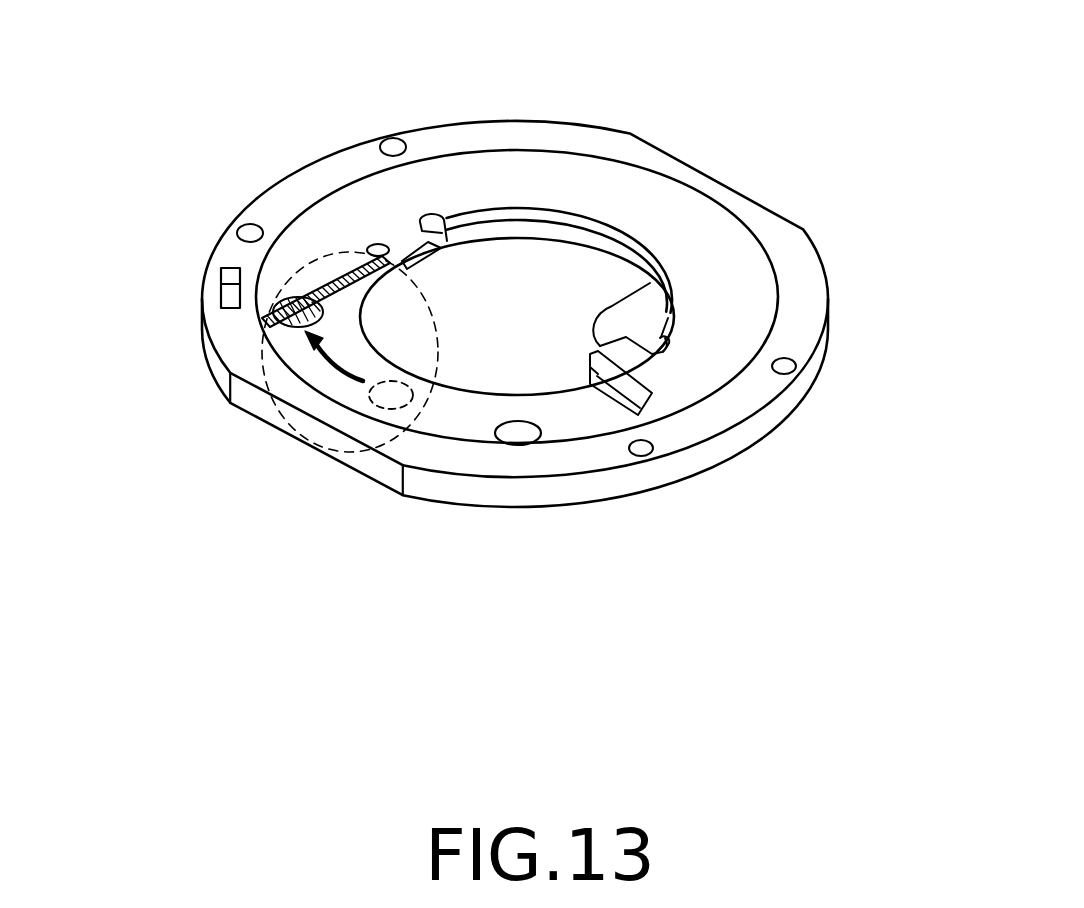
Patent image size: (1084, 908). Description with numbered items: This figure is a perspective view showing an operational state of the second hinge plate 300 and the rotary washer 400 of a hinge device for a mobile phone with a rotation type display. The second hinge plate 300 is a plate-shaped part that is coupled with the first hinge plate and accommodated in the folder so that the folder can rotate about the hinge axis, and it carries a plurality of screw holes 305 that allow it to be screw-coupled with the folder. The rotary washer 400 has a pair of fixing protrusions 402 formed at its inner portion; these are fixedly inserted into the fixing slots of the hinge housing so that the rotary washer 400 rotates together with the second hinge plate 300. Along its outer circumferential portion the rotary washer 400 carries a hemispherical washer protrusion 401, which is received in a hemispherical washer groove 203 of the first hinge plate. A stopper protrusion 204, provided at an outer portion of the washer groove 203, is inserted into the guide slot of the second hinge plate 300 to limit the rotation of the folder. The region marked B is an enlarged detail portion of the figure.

The second hinge plate 300 is at (508, 116).
The rotary washer 400 is at (692, 188).
The fixing protrusions 402 is at (447, 239).
The washer protrusion 401 is at (303, 310).
The washer groove 203 is at (305, 318).
The stopper protrusion 204 is at (221, 285).
The screw holes 305 is at (790, 370).
The side portion B is at (301, 452).